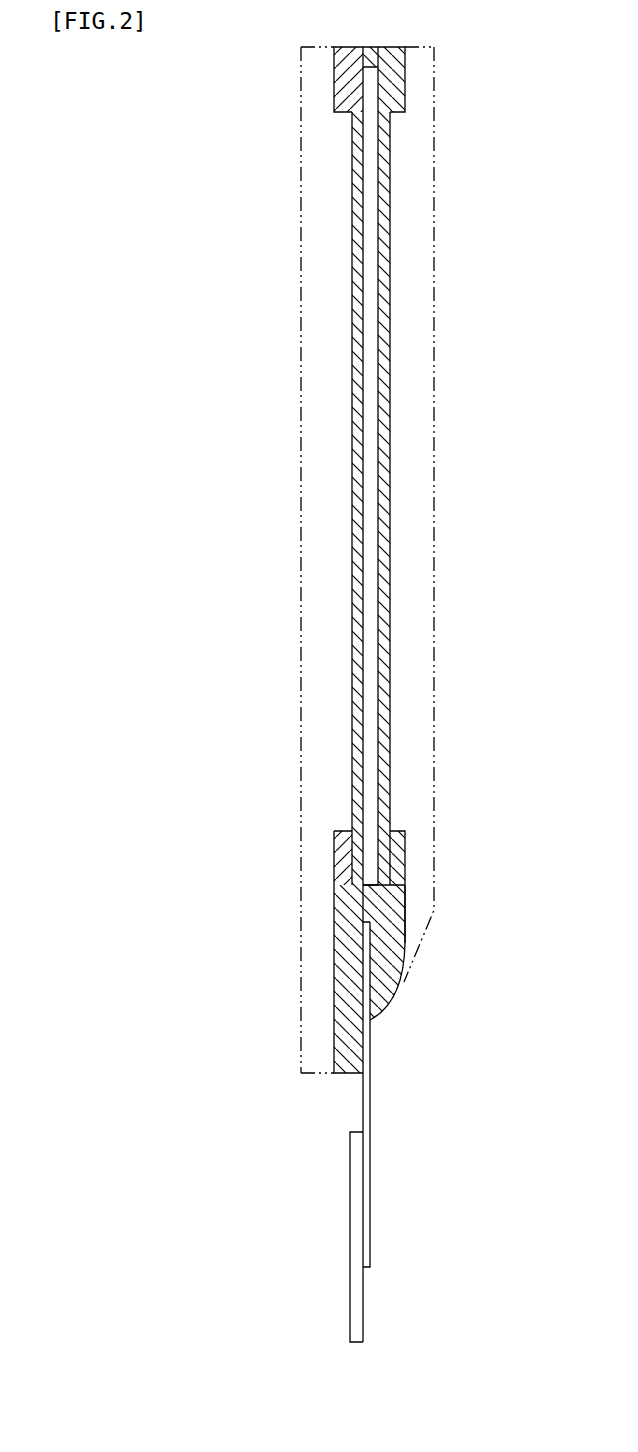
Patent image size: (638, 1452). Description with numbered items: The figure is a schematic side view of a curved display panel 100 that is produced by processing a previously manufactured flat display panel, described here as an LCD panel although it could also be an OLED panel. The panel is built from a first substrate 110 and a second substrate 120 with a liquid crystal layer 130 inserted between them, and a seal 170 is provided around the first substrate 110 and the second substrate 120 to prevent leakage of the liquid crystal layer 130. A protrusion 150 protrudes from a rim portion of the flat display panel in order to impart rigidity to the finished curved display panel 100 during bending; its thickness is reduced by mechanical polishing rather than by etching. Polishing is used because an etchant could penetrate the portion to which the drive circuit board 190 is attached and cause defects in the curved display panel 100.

The curved display panel 100 is at (177, 248).
The first substrate 110 is at (358, 380).
The second substrate 120 is at (383, 393).
The liquid crystal layer 130 is at (368, 312).
The protrusion 150 is at (347, 83).
The seal 170 is at (395, 950).
The drive circuit board 190 is at (355, 1171).